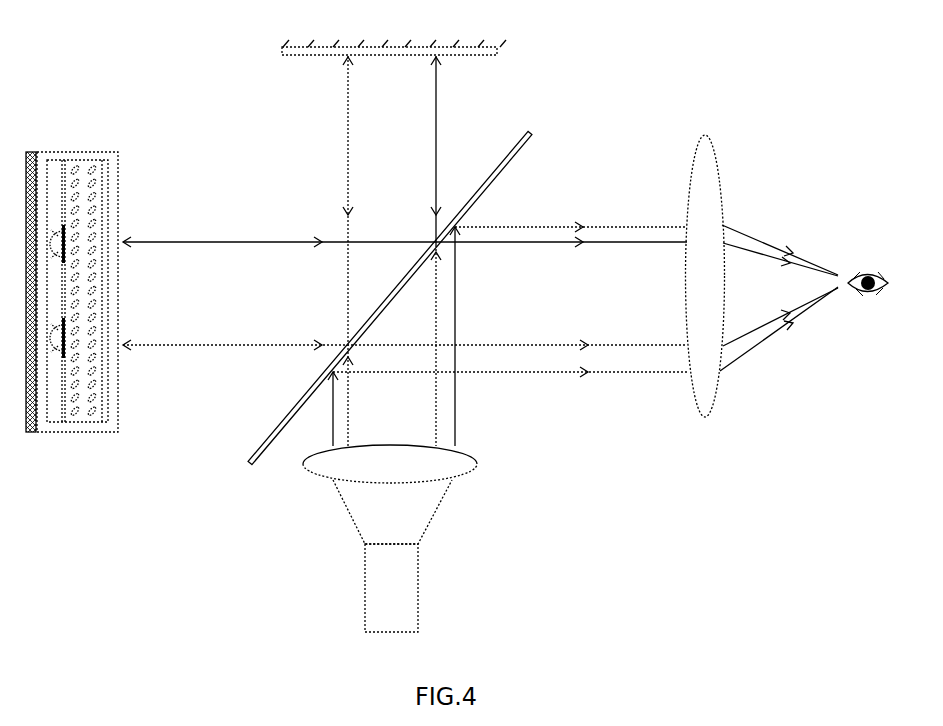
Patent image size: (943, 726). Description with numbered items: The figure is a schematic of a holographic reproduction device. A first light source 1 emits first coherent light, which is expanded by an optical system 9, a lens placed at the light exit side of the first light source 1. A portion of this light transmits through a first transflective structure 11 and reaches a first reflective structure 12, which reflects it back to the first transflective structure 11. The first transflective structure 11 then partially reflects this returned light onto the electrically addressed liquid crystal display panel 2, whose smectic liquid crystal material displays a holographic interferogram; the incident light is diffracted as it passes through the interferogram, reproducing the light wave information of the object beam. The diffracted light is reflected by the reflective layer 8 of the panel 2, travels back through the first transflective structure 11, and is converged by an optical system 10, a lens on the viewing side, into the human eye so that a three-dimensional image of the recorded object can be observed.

The first light source 1 is at (418, 584).
The electrically addressed liquid crystal display panel 2 is at (108, 142).
The reflective layer 8 is at (31, 144).
The optical system 9 is at (487, 452).
The optical system 10 is at (727, 163).
The first transflective structure 11 is at (528, 118).
The first reflective structure 12 is at (500, 34).